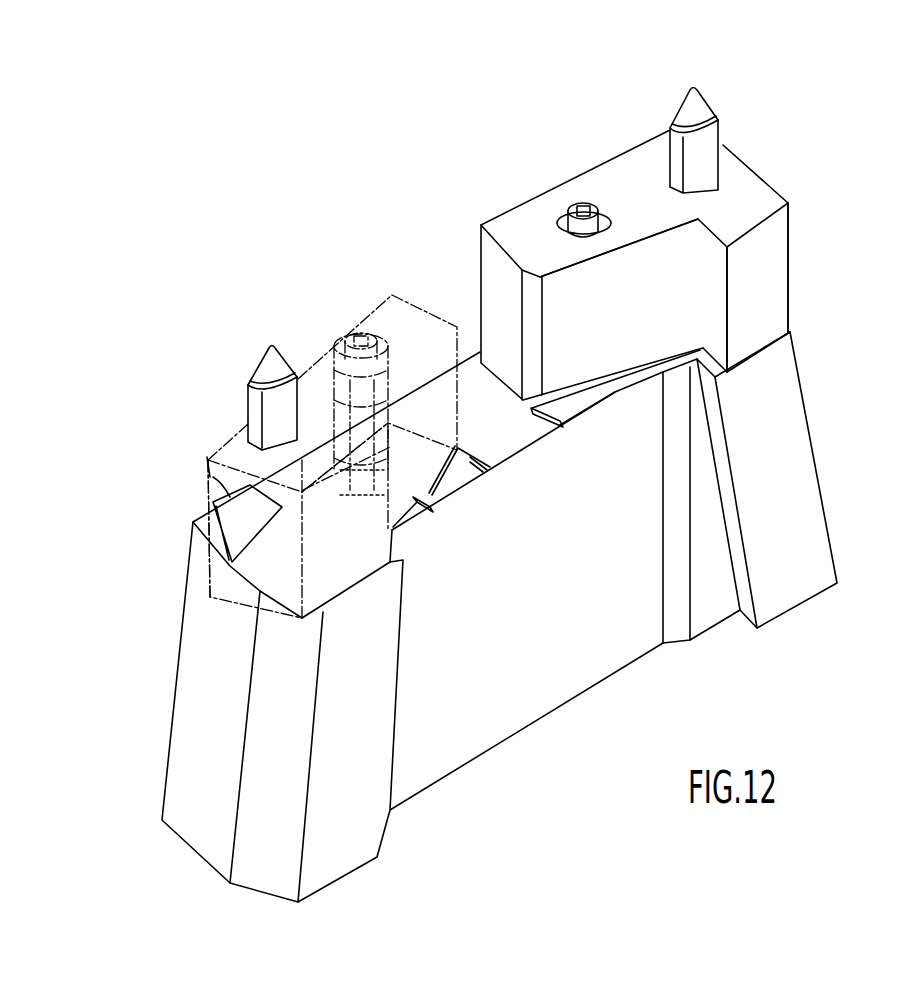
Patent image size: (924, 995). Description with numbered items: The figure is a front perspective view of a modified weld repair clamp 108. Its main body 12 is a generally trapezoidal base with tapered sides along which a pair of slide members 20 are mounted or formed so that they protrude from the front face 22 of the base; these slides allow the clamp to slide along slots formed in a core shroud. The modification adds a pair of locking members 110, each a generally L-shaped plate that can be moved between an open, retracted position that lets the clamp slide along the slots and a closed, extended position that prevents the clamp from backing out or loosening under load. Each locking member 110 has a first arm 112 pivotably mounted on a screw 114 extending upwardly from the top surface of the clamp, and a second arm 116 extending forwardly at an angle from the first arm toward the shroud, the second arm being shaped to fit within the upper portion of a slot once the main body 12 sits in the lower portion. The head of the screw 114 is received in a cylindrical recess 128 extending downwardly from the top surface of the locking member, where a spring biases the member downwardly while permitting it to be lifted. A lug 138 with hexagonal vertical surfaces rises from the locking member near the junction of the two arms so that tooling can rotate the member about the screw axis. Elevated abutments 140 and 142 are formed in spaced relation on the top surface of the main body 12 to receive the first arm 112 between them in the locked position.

The main body 12 is at (162, 820).
The slide members 20 is at (815, 598).
The front face 22 is at (515, 668).
The modified weld repair clamp 108 is at (122, 452).
The locking member 110 is at (742, 138).
The first arm 112 is at (640, 168).
The screw 114 is at (567, 203).
The second arm 116 is at (780, 192).
The cylindrical recess 128 is at (560, 220).
The lug 138 is at (705, 97).
The elevated abutment 140 is at (210, 478).
The elevated abutment 142 is at (490, 452).